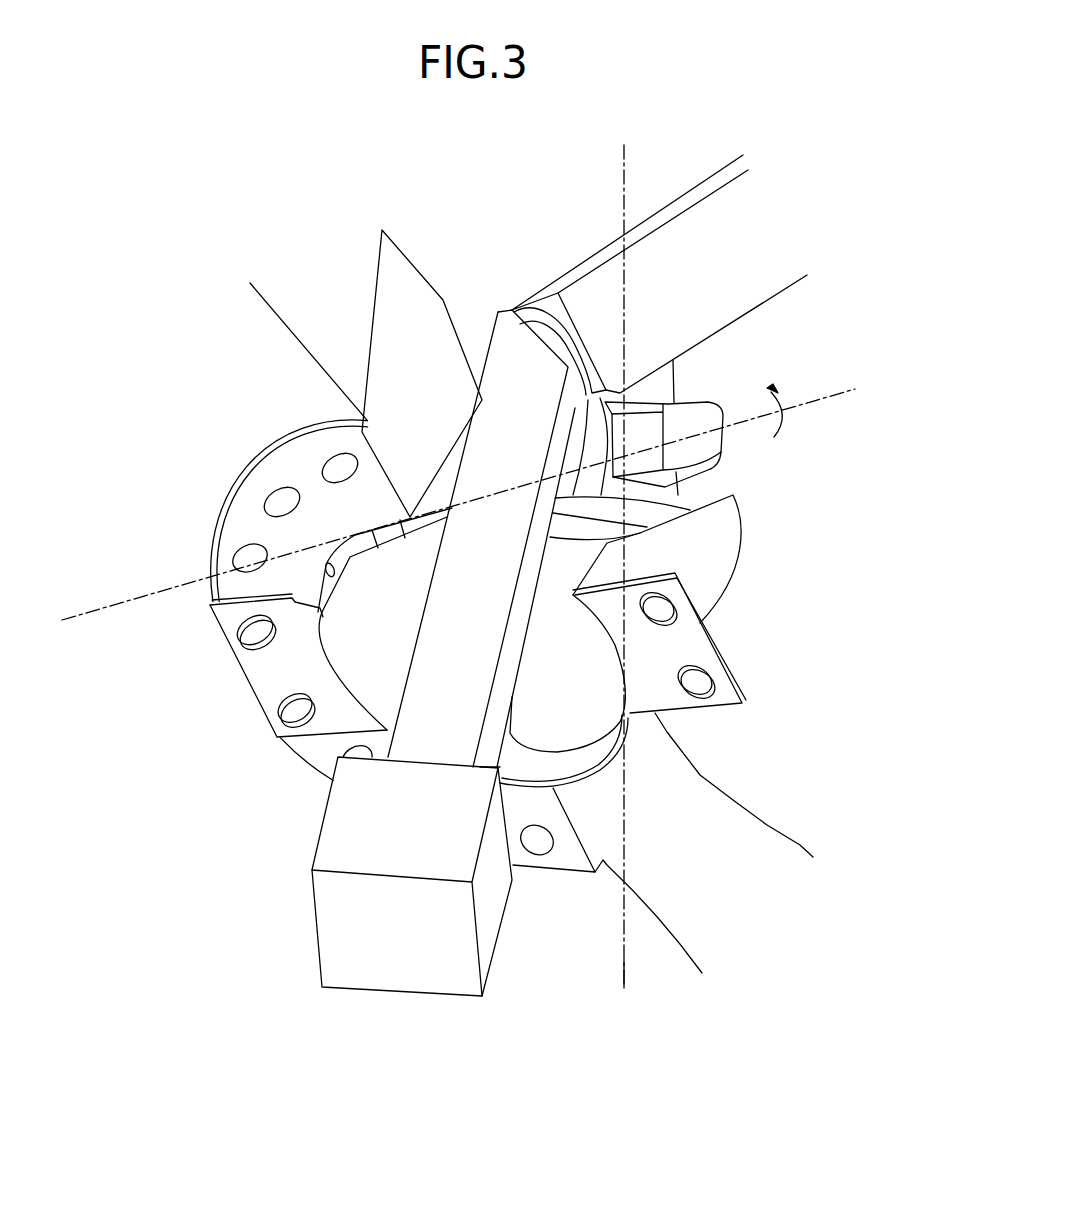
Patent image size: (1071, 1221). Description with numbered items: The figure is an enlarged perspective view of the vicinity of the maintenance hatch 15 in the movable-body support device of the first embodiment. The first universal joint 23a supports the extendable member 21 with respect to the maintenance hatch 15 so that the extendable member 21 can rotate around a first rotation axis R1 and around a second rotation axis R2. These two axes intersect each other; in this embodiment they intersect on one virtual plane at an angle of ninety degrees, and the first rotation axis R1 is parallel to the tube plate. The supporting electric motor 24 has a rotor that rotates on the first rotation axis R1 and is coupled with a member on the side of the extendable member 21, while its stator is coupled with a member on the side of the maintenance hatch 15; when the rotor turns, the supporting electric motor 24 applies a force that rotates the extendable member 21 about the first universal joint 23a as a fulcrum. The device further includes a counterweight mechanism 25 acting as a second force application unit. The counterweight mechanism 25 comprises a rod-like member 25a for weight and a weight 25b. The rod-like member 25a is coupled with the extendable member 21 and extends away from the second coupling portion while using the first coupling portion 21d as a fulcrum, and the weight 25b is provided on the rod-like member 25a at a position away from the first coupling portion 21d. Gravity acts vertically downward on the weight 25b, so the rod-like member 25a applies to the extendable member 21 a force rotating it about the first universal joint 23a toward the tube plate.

The maintenance hatch 15 is at (318, 577).
The extendable member 21 is at (597, 258).
The first coupling portion 21d is at (562, 292).
The first universal joint 23a is at (683, 381).
The supporting electric motor 24 is at (710, 453).
The counterweight mechanism 25 is at (352, 680).
The rod-like member for weight 25a is at (388, 730).
The weight 25b is at (412, 900).
The first rotation axis R1 is at (811, 406).
The second rotation axis R2 is at (625, 976).